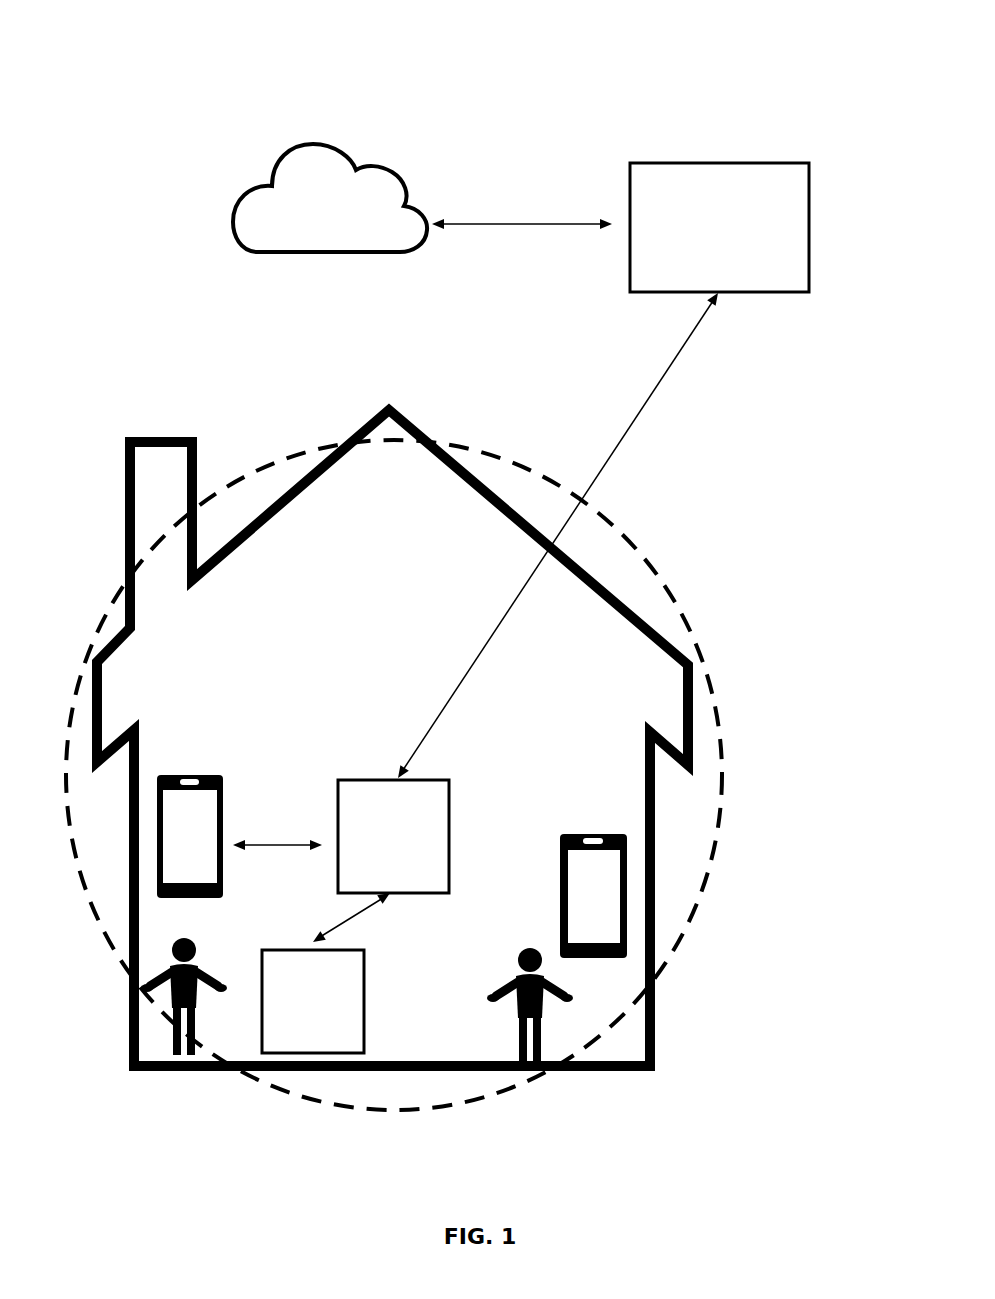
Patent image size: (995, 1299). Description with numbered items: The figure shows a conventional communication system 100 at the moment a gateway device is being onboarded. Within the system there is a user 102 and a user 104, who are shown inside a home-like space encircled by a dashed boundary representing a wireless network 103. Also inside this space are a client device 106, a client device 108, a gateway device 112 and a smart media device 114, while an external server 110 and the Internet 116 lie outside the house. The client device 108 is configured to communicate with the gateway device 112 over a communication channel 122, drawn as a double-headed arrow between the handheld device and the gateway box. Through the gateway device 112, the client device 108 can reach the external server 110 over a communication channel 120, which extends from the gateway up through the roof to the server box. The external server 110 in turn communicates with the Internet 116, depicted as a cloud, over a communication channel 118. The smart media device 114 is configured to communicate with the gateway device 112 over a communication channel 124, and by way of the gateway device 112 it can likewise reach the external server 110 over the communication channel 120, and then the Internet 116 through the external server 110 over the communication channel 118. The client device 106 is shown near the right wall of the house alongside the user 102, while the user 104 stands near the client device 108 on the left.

The communication system 100 is at (222, 89).
The user 102 is at (530, 1072).
The wireless network 103 is at (690, 628).
The user 104 is at (180, 1072).
The client device 106 is at (627, 906).
The client device 108 is at (205, 775).
The external server 110 is at (690, 160).
The gateway device 112 is at (378, 780).
The smart media device 114 is at (322, 1053).
The Internet 116 is at (373, 163).
The communication channel 118 is at (505, 226).
The communication channel 120 is at (620, 447).
The communication channel 122 is at (271, 845).
The communication channel 124 is at (360, 912).